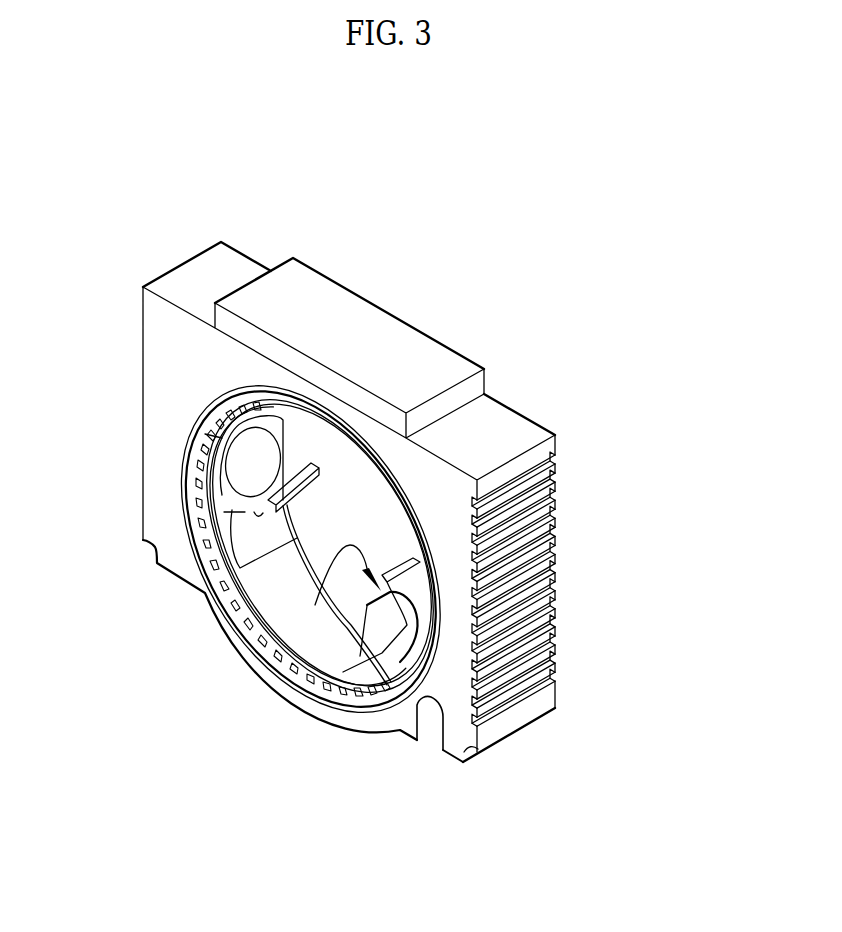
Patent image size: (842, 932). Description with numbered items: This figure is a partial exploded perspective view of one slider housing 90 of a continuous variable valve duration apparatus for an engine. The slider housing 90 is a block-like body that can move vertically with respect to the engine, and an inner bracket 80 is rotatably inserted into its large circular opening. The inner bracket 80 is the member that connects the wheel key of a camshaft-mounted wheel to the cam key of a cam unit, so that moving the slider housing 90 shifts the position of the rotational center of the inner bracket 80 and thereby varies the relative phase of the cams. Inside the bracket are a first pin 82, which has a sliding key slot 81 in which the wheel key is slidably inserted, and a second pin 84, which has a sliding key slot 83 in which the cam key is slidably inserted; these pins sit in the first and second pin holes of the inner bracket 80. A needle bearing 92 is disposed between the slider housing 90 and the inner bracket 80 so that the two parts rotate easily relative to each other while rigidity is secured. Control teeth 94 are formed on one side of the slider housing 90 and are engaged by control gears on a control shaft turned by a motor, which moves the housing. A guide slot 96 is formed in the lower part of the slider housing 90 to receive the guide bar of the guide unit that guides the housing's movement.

The slider housing 90 is at (348, 529).
The inner bracket 80 is at (285, 549).
The sliding key slot 81 is at (320, 465).
The first pin 82 is at (253, 463).
The sliding key slot 83 is at (403, 627).
The second pin 84 is at (315, 605).
The needle bearing 92 is at (202, 518).
The control teeth 94 is at (548, 573).
The guide slot 96 is at (433, 723).